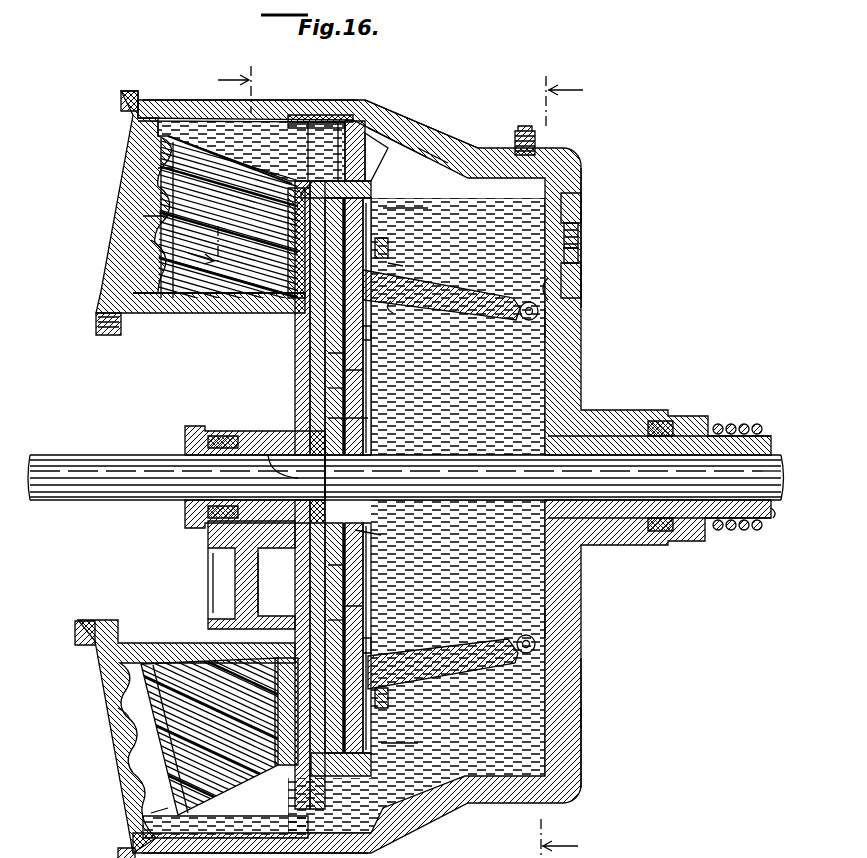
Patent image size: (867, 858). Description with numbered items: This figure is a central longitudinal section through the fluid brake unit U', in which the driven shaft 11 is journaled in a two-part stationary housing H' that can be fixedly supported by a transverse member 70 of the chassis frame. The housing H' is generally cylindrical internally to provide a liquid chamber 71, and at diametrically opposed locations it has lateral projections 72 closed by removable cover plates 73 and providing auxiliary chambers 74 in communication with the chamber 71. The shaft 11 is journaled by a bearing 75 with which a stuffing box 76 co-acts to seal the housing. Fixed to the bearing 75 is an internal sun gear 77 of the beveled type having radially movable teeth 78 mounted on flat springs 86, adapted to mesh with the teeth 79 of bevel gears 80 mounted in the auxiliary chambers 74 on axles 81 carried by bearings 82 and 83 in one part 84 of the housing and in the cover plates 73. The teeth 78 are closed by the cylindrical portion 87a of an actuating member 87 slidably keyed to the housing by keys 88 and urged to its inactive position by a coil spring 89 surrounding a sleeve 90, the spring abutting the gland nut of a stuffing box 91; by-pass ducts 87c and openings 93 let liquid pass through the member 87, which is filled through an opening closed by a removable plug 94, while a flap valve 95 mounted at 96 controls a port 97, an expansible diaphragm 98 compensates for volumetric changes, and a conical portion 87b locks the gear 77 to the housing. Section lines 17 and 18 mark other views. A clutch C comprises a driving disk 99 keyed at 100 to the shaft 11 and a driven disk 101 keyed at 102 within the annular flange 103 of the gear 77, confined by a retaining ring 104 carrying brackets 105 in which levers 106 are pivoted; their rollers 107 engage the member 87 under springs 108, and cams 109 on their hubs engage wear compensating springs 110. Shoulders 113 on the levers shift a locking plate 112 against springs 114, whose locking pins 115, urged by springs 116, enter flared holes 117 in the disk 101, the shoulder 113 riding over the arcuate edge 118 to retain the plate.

The driven shaft 11 is at (45, 493).
The section line 17- 17 is at (208, 167).
The section line 18- 18 is at (577, 467).
The transverse member 70 is at (207, 547).
The liquid chamber 71 is at (560, 357).
The lateral projections 72 is at (173, 309).
The removable cover plates 73 is at (143, 152).
The auxiliary chambers 74 is at (203, 298).
The bearing 75 is at (200, 520).
The stuffing box 76 is at (177, 432).
The internal sun gear 77 is at (340, 416).
The radially movable teeth 78 is at (233, 133).
The teeth of bevel gears 79 is at (170, 215).
The bevel gears 80 is at (143, 260).
The axles 81 is at (137, 208).
The bearing 82 is at (203, 600).
The bearing 83 is at (130, 230).
The housing part 84 is at (243, 315).
The flat springs 86 is at (313, 112).
The actuating member 87 is at (397, 143).
The cylindrical portion 87a is at (335, 110).
The conical portion 87b is at (427, 133).
The by-pass ducts 87c is at (307, 108).
The keys 88 is at (322, 107).
The coil spring 89 is at (717, 418).
The sleeve 90 is at (767, 500).
The stuffing box 91 is at (670, 406).
The openings 93 is at (573, 711).
The removable plug 94 is at (513, 122).
The flap valve 95 is at (570, 283).
The flap valve mounting 96 is at (573, 190).
The port 97 is at (566, 222).
The expansible diaphragm 98 is at (566, 236).
The driving disk 99 is at (205, 572).
The key 100 is at (260, 447).
The driven disk 101 is at (380, 133).
The key 102 is at (345, 187).
The annular flange 103 is at (348, 167).
The retaining ring 104 is at (375, 200).
The brackets 105 is at (370, 247).
The levers 106 is at (460, 287).
The ball bearing studded rollers 107 is at (570, 323).
The springs 108 is at (467, 303).
The cams 109 is at (383, 293).
The wear compensating springs 110 is at (390, 260).
The locking plate 112 is at (373, 510).
The shoulders 113 is at (373, 327).
The springs 114 is at (365, 380).
The locking pins 115 is at (365, 360).
The springs 116 is at (365, 340).
The holes 117 is at (283, 330).
The arcuate edge 118 is at (365, 612).
The clutch C is at (373, 527).
The stationary housing H' is at (609, 228).
The fluid brake unit U' is at (602, 748).